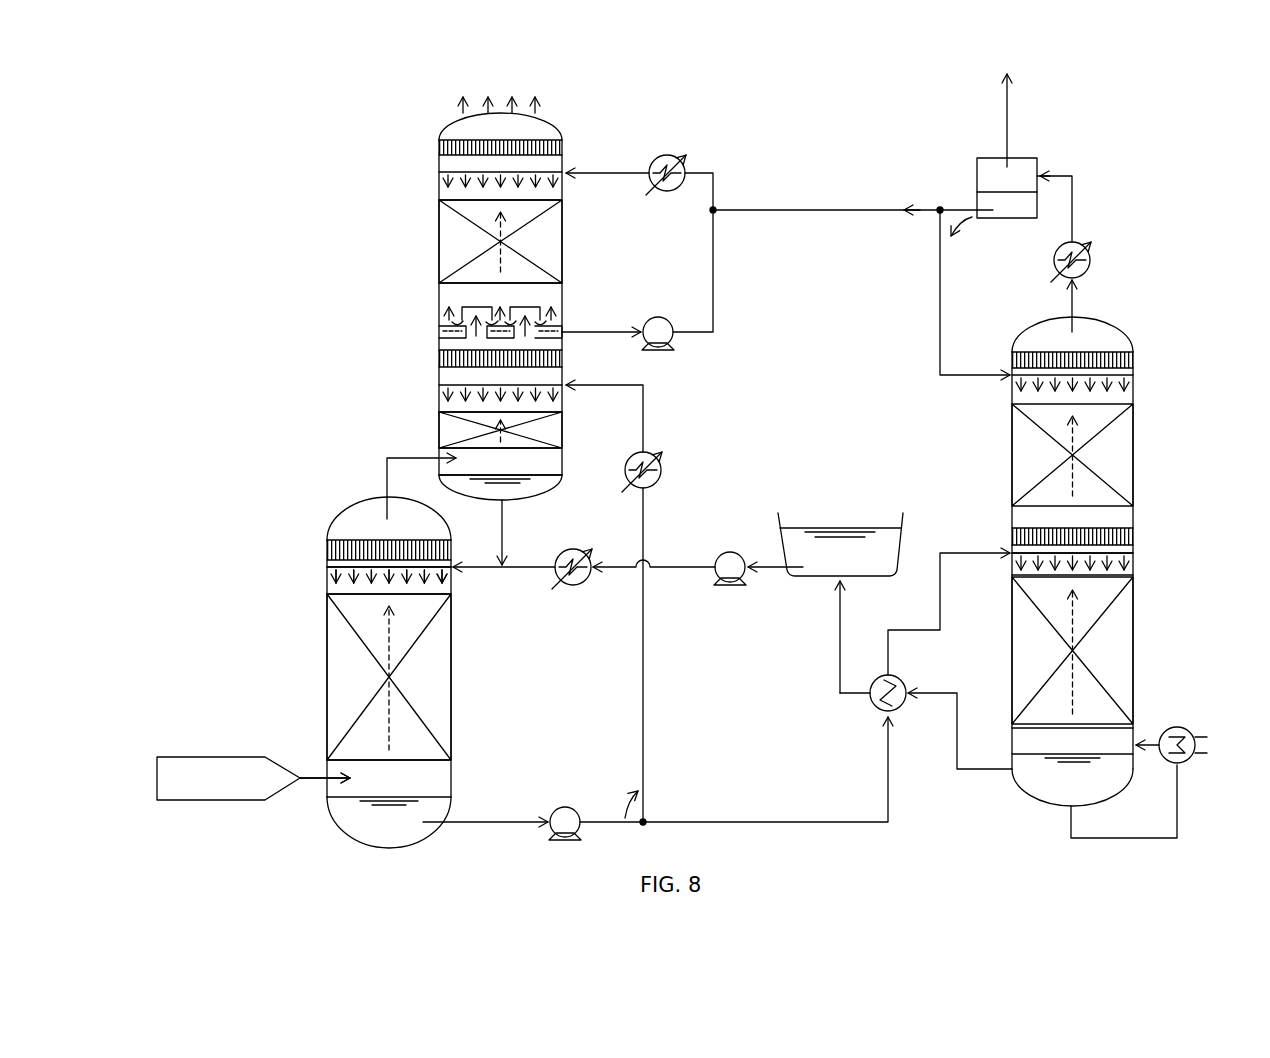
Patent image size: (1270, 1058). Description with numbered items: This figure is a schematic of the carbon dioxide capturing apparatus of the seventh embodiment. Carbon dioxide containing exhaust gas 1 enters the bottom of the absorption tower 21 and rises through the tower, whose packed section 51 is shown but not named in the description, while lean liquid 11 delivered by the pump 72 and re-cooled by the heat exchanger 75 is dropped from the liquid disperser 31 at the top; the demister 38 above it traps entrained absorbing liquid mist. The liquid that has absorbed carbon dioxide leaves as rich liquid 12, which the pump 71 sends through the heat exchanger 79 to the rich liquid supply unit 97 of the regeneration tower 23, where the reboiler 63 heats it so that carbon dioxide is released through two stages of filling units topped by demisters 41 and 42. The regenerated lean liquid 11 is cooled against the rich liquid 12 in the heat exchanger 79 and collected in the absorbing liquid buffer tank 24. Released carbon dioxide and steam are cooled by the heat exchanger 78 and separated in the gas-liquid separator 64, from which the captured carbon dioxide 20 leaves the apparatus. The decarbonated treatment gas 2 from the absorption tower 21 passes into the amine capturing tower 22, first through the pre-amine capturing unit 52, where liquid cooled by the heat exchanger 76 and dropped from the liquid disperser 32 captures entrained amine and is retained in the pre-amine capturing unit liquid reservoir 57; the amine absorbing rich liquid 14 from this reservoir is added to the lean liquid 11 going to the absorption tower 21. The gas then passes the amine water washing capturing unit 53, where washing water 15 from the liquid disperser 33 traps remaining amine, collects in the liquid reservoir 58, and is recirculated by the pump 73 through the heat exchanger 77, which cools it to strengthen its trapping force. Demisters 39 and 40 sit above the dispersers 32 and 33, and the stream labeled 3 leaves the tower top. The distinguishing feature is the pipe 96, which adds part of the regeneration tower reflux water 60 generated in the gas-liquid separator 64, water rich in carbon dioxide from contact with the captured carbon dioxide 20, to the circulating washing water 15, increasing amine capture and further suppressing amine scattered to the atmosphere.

The carbon dioxide containing exhaust gas 1 is at (213, 757).
The decarbonated treatment gas 2 is at (387, 478).
The vent gas outlet 3 is at (460, 102).
The lean liquid 11 is at (483, 567).
The rich liquid 12 is at (500, 822).
The amine absorbing rich liquid 14 is at (502, 522).
The washing water 15 is at (713, 246).
The captured carbon dioxide 20 is at (1007, 100).
The absorption tower 21 is at (313, 603).
The amine capturing tower 22 is at (424, 198).
The regeneration tower 23 is at (1147, 435).
The absorbing liquid buffer tank 24 is at (798, 580).
The liquid disperser 31 is at (327, 573).
The liquid disperser 32 is at (439, 386).
The liquid disperser 33 is at (439, 178).
The demister 38 is at (327, 550).
The demister 39 is at (439, 358).
The demister 40 is at (439, 148).
The demister 41 is at (1012, 536).
The demister 42 is at (1133, 360).
The packing of first column 51 is at (327, 676).
The pre-amine capturing unit 52 is at (450, 432).
The amine water washing capturing unit 53 is at (439, 252).
The pre-amine capturing unit liquid reservoir 57 is at (562, 483).
The liquid reservoir 58 is at (439, 331).
The regeneration tower reflux water 60 is at (1010, 218).
The reboiler 63 is at (1190, 760).
The gas-liquid separator 64 is at (963, 178).
The pump 71 is at (567, 806).
The pump 72 is at (730, 583).
The pump 73 is at (665, 317).
The heat exchanger 75 is at (588, 580).
The heat exchanger 76 is at (660, 488).
The heat exchanger 77 is at (652, 160).
The heat exchanger 78 is at (1090, 270).
The heat exchanger 79 is at (900, 710).
The pipe 96 is at (810, 222).
The rich liquid supply unit 97 is at (1133, 560).